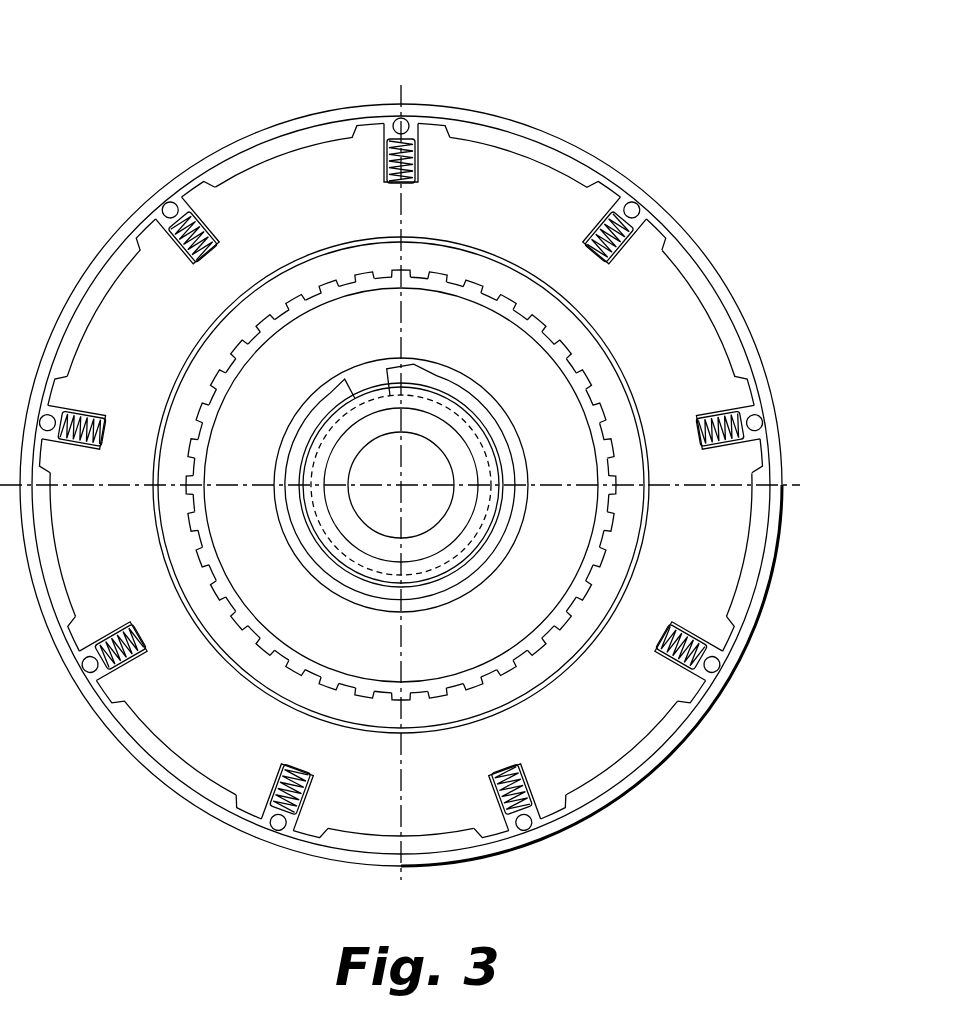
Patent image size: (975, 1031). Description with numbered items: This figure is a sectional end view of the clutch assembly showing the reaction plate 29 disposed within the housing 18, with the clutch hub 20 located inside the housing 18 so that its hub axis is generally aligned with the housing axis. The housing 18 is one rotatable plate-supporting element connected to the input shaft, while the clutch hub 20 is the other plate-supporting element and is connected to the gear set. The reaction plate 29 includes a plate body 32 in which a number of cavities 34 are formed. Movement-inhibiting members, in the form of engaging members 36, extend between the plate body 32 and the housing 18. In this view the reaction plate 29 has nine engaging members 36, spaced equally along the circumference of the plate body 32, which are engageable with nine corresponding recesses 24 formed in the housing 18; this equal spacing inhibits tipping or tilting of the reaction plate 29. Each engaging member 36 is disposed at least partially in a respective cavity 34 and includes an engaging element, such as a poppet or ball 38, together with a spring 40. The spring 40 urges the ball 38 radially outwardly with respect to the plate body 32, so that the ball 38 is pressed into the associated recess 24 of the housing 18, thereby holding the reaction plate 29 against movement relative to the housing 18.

The housing 18 is at (513, 120).
The clutch hub 20 is at (267, 653).
The recesses 24 is at (404, 116).
The reaction plate 29 is at (700, 300).
The plate body 32 is at (630, 748).
The cavities 34 is at (623, 199).
The engaging members 36 is at (647, 193).
The ball 38 is at (641, 216).
The spring 40 is at (620, 242).